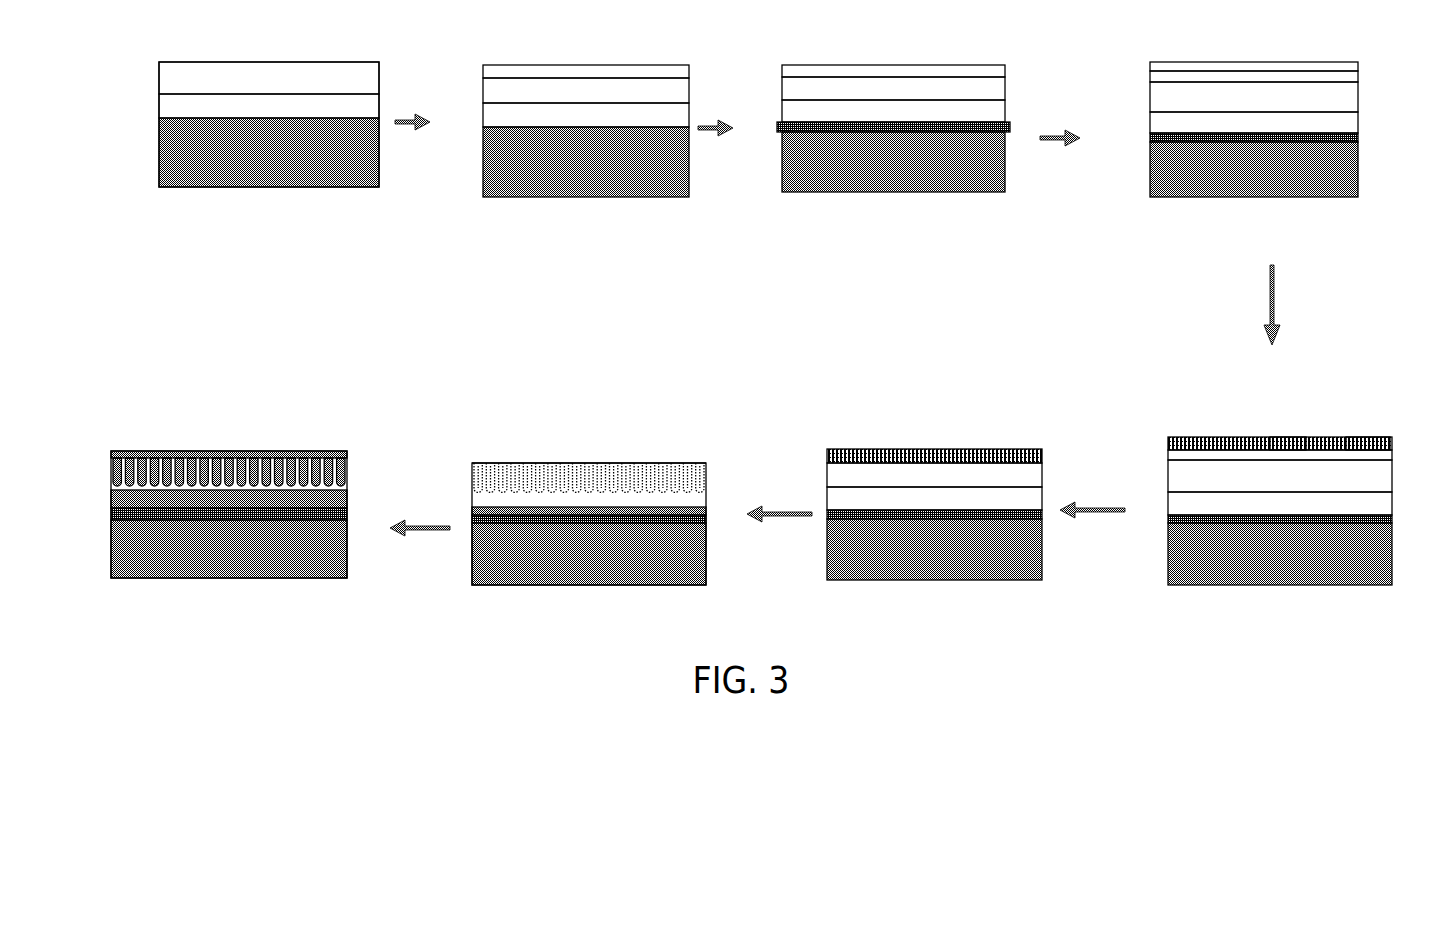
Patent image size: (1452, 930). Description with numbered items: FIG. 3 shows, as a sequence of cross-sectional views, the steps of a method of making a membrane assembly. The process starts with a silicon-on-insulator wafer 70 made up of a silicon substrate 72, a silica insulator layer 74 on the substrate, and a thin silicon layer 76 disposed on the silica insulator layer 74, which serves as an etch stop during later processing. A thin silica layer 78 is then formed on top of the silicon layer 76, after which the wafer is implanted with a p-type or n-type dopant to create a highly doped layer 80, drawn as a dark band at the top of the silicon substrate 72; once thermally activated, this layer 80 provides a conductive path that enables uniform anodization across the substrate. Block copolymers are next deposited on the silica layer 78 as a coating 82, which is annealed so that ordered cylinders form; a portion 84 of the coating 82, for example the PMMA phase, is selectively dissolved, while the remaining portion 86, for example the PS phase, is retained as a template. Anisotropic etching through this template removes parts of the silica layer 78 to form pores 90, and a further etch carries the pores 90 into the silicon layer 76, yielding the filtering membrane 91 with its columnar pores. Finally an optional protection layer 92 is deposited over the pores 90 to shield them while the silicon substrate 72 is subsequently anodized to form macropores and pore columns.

The silicon-on-insulator wafer 70 is at (172, 54).
The silicon substrate 72 is at (162, 152).
The silica insulator layer 74 is at (162, 107).
The silicon layer 76 is at (162, 81).
The silica layer 78 is at (597, 66).
The highly doped layer 80 is at (1010, 127).
The block copolymer coating 82 is at (1152, 67).
The dissolved portion of block copolymer coating 84 is at (1350, 437).
The remaining portion of block copolymer coating 86 is at (1302, 437).
The pores 90 is at (628, 463).
The filtering membrane 91 is at (472, 465).
The protection layer 92 is at (303, 452).